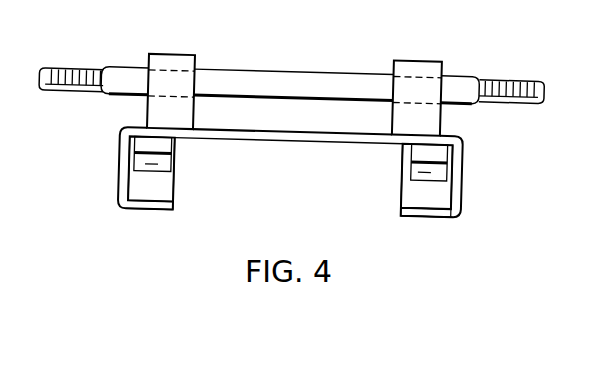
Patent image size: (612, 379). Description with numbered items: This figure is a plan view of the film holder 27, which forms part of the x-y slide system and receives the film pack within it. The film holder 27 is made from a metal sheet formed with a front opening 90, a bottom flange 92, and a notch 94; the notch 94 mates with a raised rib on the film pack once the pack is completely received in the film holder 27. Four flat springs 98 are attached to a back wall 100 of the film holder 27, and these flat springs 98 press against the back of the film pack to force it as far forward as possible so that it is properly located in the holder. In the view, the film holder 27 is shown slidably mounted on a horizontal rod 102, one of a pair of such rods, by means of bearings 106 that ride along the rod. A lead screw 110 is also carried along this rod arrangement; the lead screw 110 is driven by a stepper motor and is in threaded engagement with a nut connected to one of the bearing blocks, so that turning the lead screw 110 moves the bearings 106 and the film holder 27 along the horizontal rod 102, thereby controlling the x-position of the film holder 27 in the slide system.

The film holder 27 is at (323, 174).
The front opening 90 is at (405, 212).
The bottom flange 92 is at (170, 194).
The notch 94 is at (152, 209).
The flat springs 98 is at (164, 163).
The back wall 100 is at (286, 131).
The horizontal rod 102 is at (302, 68).
The bearings 106 is at (167, 61).
The lead screw 110 is at (525, 76).